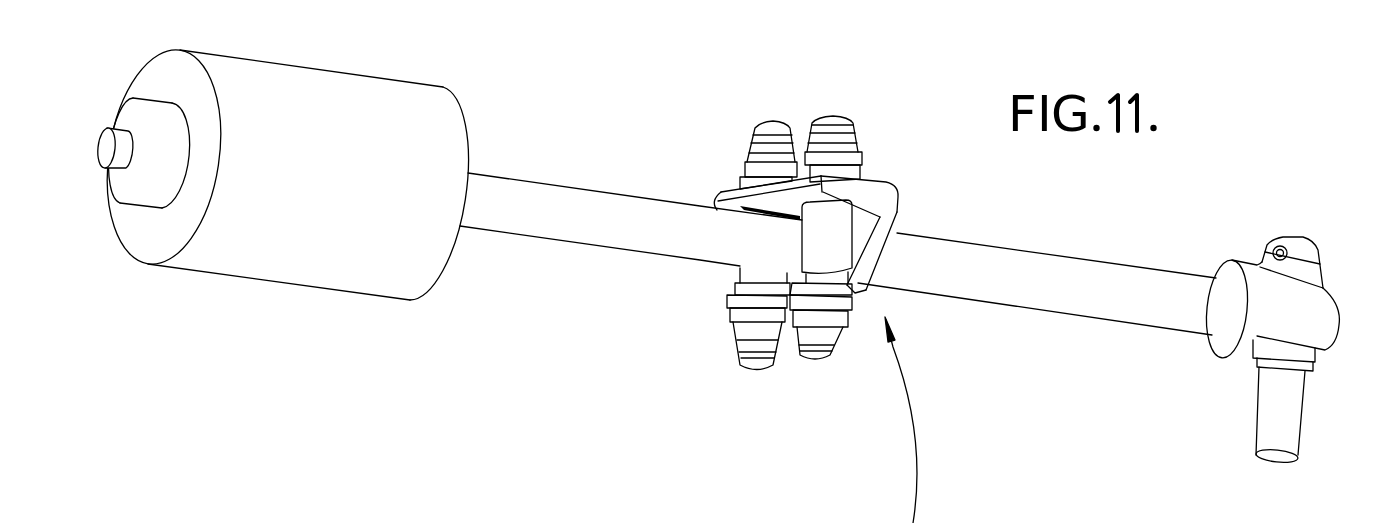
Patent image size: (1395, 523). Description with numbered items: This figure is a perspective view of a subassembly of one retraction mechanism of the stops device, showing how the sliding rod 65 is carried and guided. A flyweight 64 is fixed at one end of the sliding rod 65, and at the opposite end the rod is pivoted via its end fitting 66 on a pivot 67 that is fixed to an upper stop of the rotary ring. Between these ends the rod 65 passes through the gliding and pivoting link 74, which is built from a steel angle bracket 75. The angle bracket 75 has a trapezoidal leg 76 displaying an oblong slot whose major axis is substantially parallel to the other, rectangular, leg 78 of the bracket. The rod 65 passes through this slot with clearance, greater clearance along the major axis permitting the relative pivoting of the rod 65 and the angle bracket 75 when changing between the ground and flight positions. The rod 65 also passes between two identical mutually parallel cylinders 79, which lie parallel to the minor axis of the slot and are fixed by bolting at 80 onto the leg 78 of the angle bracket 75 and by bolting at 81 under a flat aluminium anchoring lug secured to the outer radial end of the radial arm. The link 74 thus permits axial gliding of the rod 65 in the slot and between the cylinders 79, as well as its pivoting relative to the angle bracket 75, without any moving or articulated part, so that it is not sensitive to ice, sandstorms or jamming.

The flyweight 64 is at (267, 250).
The sliding rod 65 is at (612, 230).
The end fitting 66 is at (1270, 313).
The pivot 67 is at (1287, 277).
The gliding and pivoting link 74 is at (814, 246).
The steel angle bracket 75 is at (887, 197).
The trapezoidal leg 76 is at (870, 260).
The rectangular leg 78 is at (737, 198).
The cylinders 79 is at (830, 238).
The bolting 80 is at (763, 148).
The bolting 81 is at (746, 321).